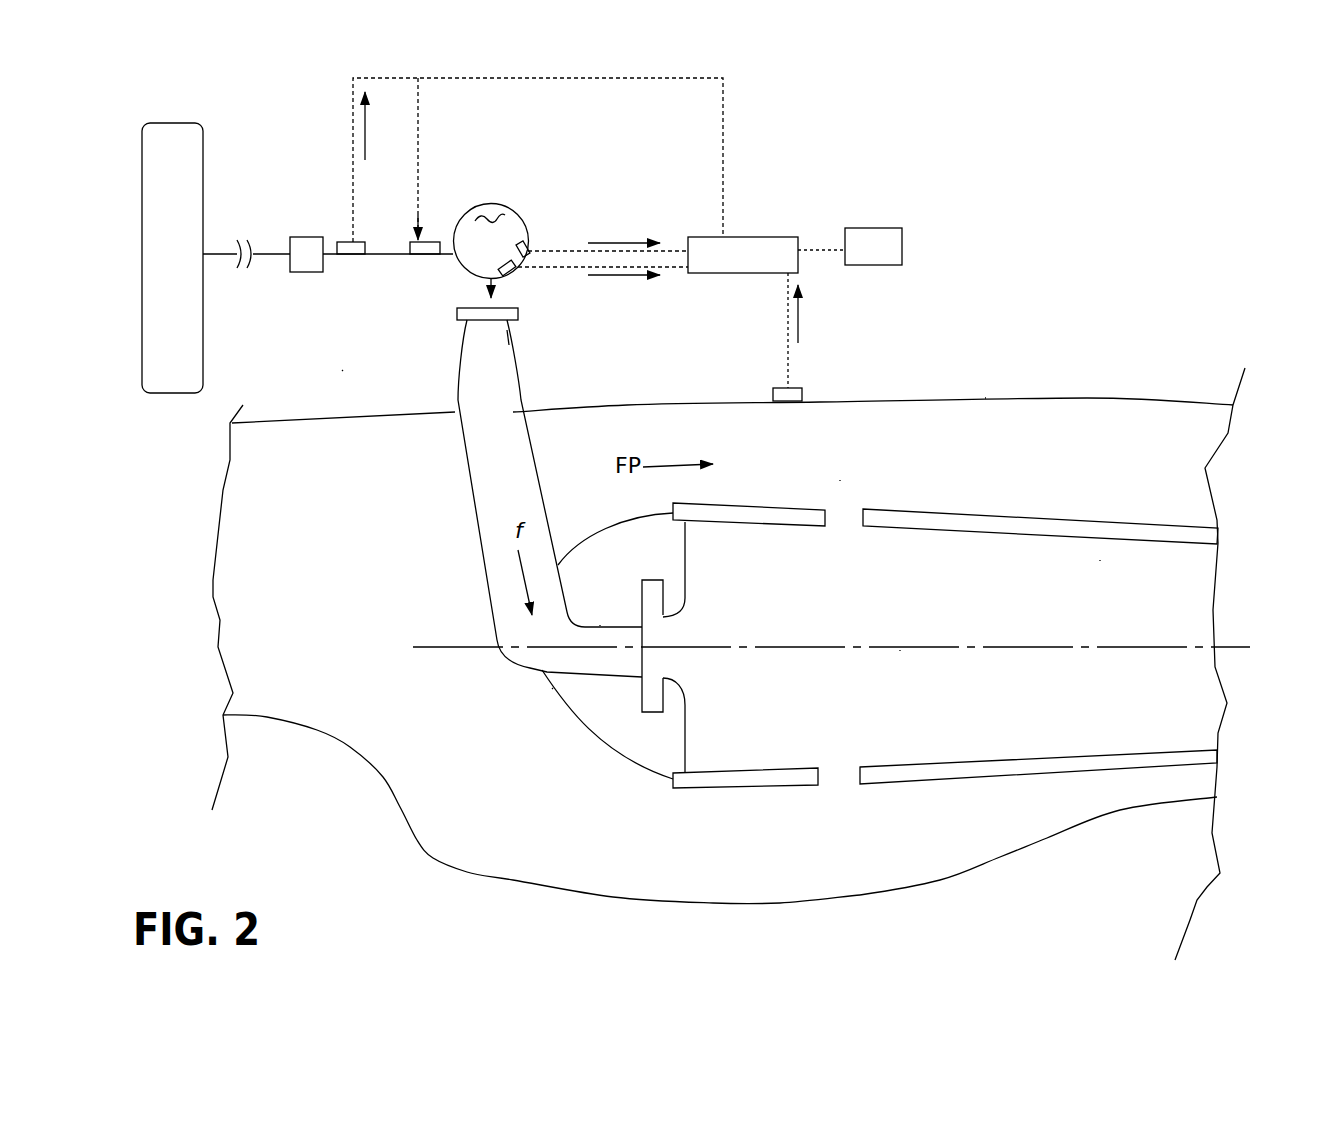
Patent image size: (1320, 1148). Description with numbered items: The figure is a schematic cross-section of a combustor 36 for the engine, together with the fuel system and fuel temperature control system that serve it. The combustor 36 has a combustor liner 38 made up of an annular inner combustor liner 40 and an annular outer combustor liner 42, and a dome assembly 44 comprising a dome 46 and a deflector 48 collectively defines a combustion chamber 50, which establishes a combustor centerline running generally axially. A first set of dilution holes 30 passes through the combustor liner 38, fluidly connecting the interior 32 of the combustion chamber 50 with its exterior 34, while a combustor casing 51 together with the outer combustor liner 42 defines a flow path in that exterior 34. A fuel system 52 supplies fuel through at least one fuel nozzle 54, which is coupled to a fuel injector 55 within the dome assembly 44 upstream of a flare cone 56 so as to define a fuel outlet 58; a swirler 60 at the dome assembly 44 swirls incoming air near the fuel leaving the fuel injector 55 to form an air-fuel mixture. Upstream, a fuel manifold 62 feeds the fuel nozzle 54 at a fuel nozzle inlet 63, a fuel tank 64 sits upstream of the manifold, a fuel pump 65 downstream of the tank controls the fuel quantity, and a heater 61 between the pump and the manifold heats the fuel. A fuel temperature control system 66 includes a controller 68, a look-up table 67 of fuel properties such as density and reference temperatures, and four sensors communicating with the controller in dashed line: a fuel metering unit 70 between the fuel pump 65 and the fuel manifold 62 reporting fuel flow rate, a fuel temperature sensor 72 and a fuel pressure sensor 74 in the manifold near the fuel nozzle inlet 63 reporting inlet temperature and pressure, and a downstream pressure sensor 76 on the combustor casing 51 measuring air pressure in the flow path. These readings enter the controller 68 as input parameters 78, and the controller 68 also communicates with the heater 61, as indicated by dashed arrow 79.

The first set of dilution holes 30 is at (826, 787).
The interior 32 is at (856, 608).
The exterior 34 is at (809, 471).
The combustor 36 is at (1098, 352).
The combustor liner 38 is at (982, 787).
The annular inner combustor liner 40 is at (1188, 752).
The annular outer combustor liner 42 is at (997, 512).
The dome assembly 44 is at (551, 689).
The dome 46 is at (570, 713).
The deflector 48 is at (678, 746).
The combustion chamber 50 is at (1095, 557).
The combustor casing 51 is at (985, 398).
The fuel system 52 is at (342, 370).
The fuel nozzle 54 is at (455, 398).
The fuel injector 55 is at (632, 641).
The flare cone 56 is at (685, 598).
The fuel outlet 58 is at (677, 632).
The swirler 60 is at (648, 715).
The heater 61 is at (430, 242).
The fuel manifold 62 is at (494, 217).
The fuel nozzle inlet 63 is at (508, 325).
The fuel tank 64 is at (184, 268).
The fuel pump 65 is at (316, 268).
The fuel temperature control system 66 is at (737, 102).
The look-up table 67 is at (880, 260).
The controller 68 is at (753, 267).
The fuel metering unit 70 is at (346, 242).
The fuel temperature sensor 72 is at (508, 274).
The fuel pressure sensor 74 is at (526, 244).
The downstream pressure sensor 76 is at (775, 390).
The input parameters 78 is at (583, 225).
The dashed arrow 79 is at (418, 130).